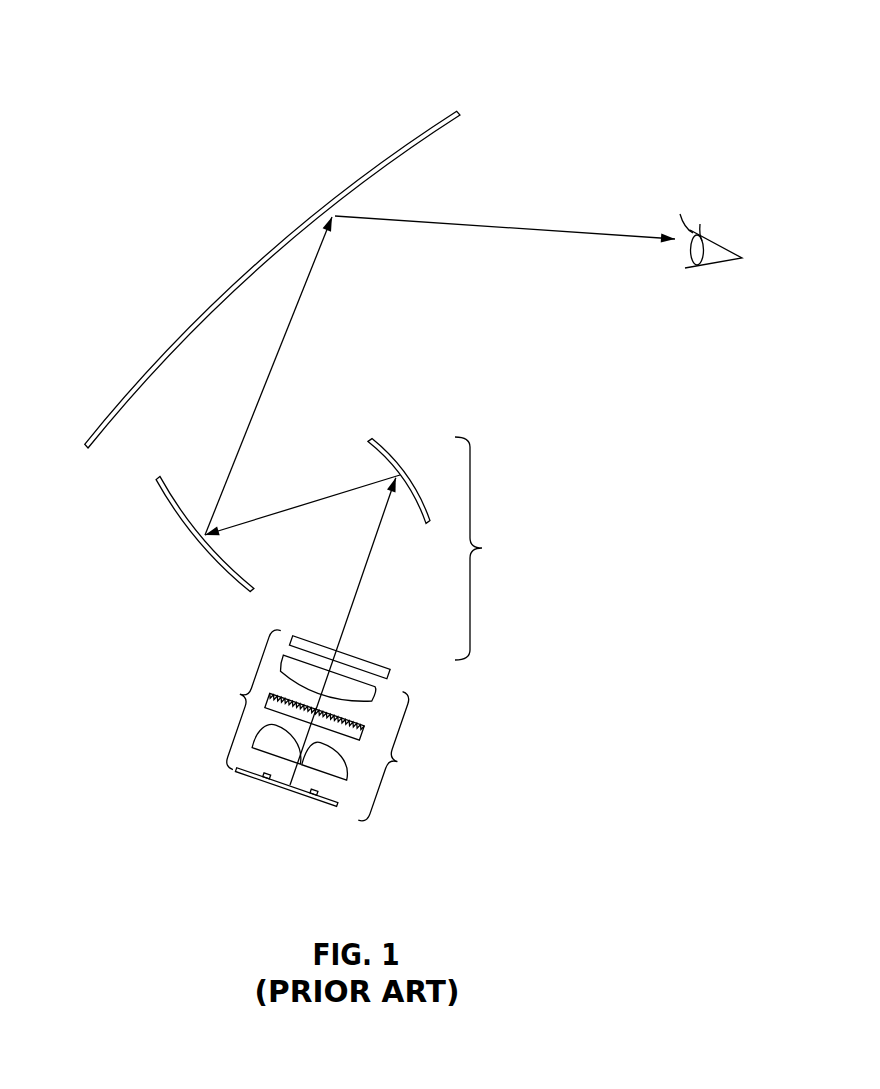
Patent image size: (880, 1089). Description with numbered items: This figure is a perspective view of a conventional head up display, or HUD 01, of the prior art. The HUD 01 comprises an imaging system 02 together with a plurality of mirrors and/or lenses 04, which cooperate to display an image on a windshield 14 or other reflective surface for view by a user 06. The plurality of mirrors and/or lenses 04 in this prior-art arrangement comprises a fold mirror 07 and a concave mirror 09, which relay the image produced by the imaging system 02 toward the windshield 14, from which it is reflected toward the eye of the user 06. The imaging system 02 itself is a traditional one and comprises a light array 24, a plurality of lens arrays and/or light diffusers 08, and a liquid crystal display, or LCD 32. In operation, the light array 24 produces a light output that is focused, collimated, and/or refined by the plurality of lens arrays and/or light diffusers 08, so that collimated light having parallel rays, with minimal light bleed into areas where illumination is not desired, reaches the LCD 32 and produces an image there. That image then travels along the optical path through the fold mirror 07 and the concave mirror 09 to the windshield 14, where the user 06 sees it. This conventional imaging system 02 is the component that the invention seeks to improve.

The HUD 01 is at (147, 55).
The imaging system 02 is at (331, 758).
The plurality of mirrors and/or lenses 04 is at (337, 517).
The user 06 is at (722, 242).
The fold mirror 07 is at (389, 447).
The plurality of lens arrays and/or light diffusers 08 is at (337, 771).
The concave mirror 09 is at (212, 566).
The windshield 14 is at (405, 150).
The light array 24 is at (305, 800).
The liquid crystal display (LCD) 32 is at (393, 673).